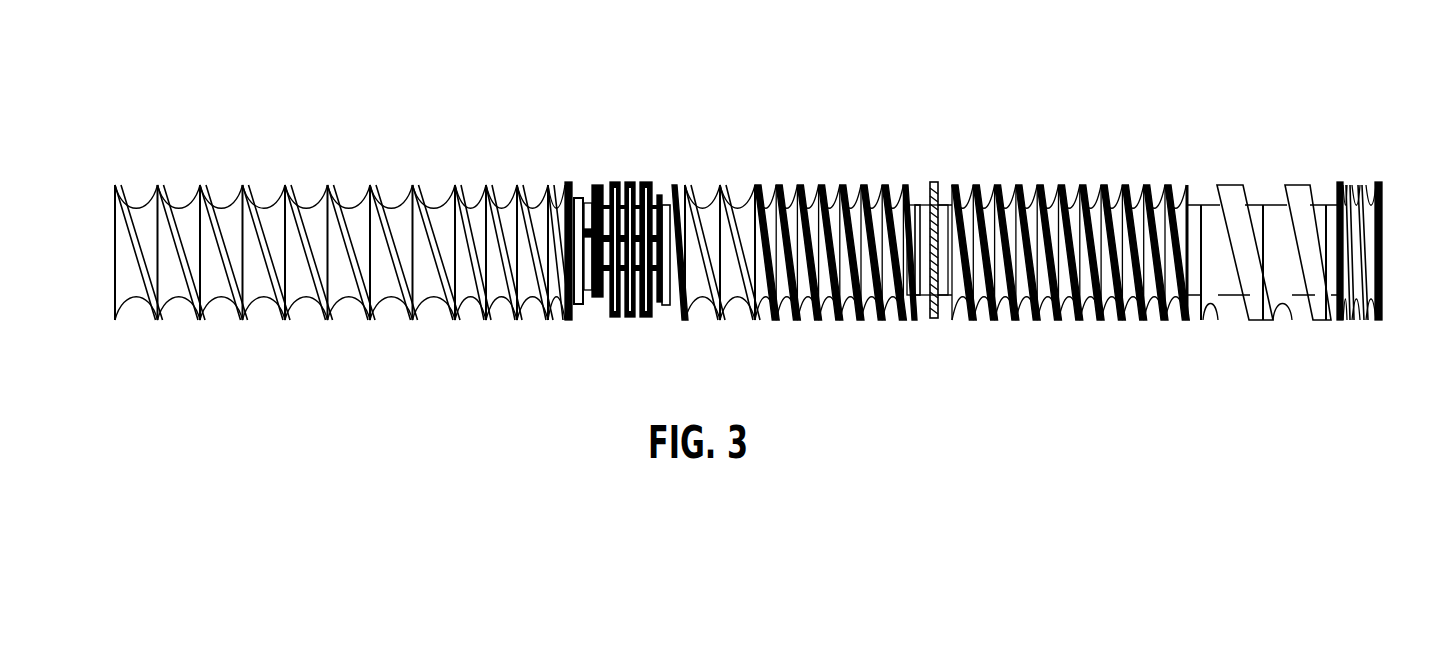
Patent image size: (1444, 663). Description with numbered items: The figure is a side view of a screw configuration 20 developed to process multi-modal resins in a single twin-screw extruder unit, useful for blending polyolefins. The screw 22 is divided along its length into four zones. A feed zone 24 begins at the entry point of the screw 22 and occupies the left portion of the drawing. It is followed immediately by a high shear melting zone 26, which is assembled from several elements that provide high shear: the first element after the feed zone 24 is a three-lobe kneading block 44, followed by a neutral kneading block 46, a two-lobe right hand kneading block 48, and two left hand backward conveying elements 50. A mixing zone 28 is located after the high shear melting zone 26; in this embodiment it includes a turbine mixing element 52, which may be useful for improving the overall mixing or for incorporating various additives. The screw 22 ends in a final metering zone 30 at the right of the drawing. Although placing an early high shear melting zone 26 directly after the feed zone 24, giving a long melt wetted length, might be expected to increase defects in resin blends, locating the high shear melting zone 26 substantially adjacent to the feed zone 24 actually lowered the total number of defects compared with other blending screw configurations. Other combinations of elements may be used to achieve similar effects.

The screw configuration 20 is at (865, 72).
The screw 22 is at (1384, 243).
The feed zone 24 is at (110, 327).
The high shear melting zone 26 is at (570, 327).
The mixing zone 28 is at (673, 327).
The final metering zone 30 is at (1196, 327).
The three-lobe kneading block 44 is at (603, 178).
The neutral kneading block 46 is at (603, 178).
The two-lobe right hand kneading block 48 is at (645, 178).
The left hand backward conveying elements 50 is at (672, 178).
The turbine mixing element 52 is at (912, 178).